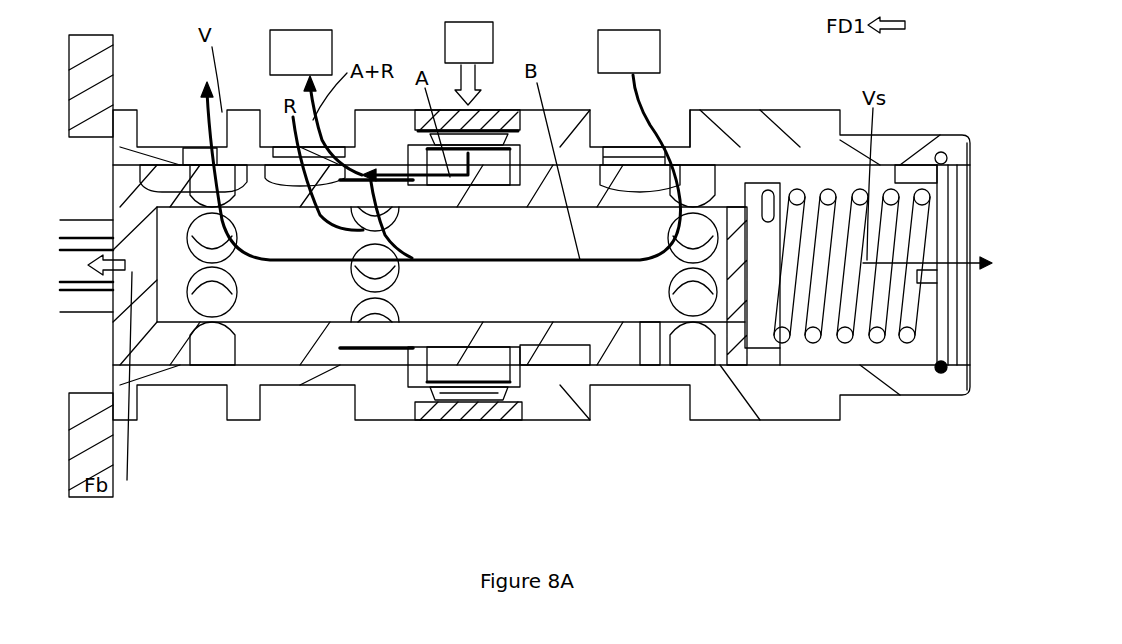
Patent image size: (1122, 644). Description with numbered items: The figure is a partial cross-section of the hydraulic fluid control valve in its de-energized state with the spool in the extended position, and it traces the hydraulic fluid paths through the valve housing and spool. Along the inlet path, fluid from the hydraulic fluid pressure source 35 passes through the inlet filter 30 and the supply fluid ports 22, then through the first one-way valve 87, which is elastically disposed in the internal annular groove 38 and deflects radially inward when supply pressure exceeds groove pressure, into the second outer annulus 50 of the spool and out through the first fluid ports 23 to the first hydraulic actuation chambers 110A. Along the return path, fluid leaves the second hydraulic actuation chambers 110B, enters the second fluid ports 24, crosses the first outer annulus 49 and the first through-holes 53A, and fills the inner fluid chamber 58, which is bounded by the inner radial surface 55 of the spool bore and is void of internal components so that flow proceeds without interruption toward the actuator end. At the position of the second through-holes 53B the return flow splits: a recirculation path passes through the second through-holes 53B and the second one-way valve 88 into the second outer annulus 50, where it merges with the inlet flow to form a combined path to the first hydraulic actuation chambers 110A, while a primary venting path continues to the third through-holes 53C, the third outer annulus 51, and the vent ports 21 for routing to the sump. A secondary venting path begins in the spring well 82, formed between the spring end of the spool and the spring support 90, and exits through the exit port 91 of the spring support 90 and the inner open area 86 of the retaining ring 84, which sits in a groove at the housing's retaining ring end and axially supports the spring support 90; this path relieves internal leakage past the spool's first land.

The third outer annulus 51 is at (155, 175).
The vent ports 21 is at (195, 150).
The first fluid ports 23 is at (283, 140).
The second fluid ports 24 is at (610, 145).
The first hydraulic actuation chambers 110A is at (301, 52).
The second hydraulic actuation chambers 110B is at (629, 51).
The hydraulic fluid pressure source 35 is at (469, 63).
The inlet filter 30 is at (500, 110).
The internal annular groove 38 is at (415, 370).
The second one-way valve 88 is at (380, 352).
The first one-way valve 87 is at (460, 383).
The supply fluid ports 22 is at (500, 400).
The second outer annulus 50 is at (553, 355).
The inner fluid chamber 58 is at (638, 310).
The inner radial surface 55 is at (658, 303).
The first outer annulus 49 is at (697, 175).
The first through-holes 53A is at (707, 197).
The second through-holes 53B is at (360, 307).
The third through-holes 53C is at (217, 327).
The spring well 82 is at (832, 350).
The spring support 90 is at (912, 170).
The exit port 91 is at (930, 270).
The inner open area 86 is at (945, 205).
The retaining ring 84 is at (941, 375).